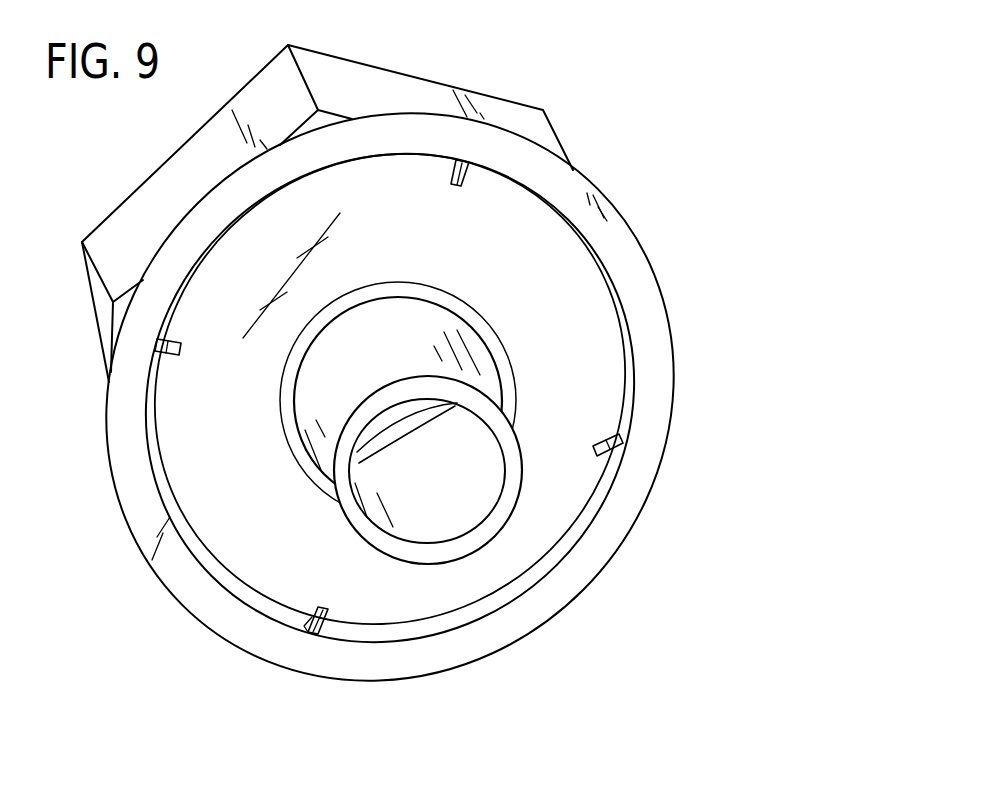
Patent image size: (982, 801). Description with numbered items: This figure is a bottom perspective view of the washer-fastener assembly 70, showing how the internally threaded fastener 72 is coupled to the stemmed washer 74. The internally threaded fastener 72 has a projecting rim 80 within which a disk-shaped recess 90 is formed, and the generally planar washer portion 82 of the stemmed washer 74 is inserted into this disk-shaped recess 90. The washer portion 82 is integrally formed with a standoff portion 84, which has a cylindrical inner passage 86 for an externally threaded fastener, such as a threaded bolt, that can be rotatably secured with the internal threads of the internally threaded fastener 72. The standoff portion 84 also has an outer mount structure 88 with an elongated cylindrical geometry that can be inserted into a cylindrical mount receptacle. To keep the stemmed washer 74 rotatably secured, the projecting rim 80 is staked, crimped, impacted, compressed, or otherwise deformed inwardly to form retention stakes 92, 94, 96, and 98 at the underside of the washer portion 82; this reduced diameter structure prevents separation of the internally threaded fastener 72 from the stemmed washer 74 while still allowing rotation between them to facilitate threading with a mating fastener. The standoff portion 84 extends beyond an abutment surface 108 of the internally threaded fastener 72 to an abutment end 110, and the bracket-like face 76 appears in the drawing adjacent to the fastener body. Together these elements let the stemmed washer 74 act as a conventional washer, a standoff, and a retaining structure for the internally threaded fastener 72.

The washer-fastener assembly 70 is at (727, 120).
The internally threaded fastener 72 is at (569, 136).
The stemmed washer 74 is at (564, 258).
The bracket mounting face 76 is at (365, 95).
The projecting rim 80 is at (127, 470).
The washer portion 82 is at (587, 327).
The standoff portion 84 is at (447, 344).
The cylindrical inner passage 86 is at (430, 516).
The outer mount structure 88 is at (316, 462).
The disk-shaped recess 90 is at (258, 610).
The retention stake 92 is at (157, 363).
The retention stake 94 is at (466, 173).
The retention stake 96 is at (617, 443).
The retention stake 98 is at (328, 627).
The abutment surface 108 is at (195, 603).
The abutment end 110 is at (517, 452).